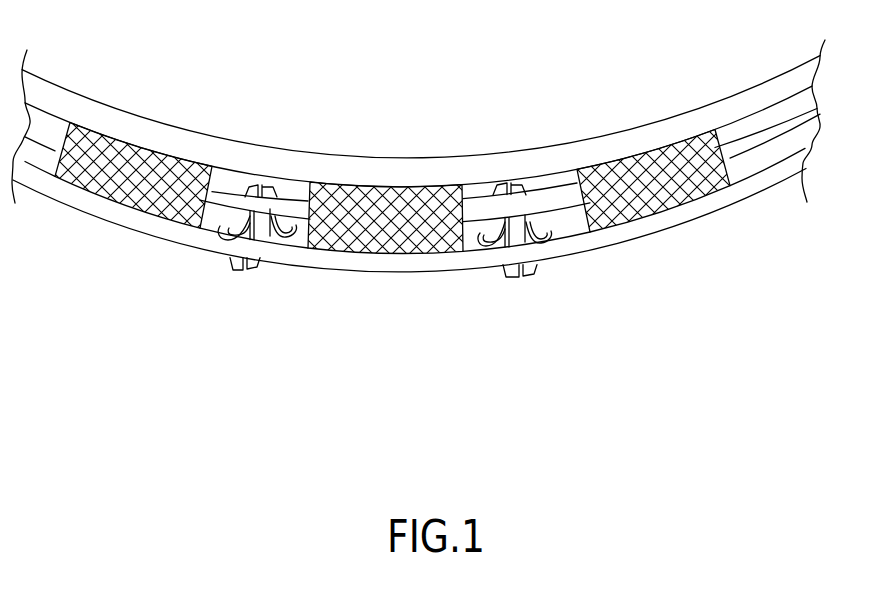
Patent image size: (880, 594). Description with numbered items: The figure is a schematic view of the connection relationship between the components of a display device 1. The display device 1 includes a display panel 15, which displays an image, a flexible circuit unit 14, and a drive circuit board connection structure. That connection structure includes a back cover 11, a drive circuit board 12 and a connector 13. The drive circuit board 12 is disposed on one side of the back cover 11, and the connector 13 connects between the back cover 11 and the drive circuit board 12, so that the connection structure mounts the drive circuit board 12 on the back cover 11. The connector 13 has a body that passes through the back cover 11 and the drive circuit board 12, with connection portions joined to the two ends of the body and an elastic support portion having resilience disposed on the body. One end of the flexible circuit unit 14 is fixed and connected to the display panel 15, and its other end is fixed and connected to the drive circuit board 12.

The display device 1 is at (333, 131).
The back cover 11 is at (752, 145).
The drive circuit board 12 is at (632, 232).
The connector 13 is at (520, 235).
The flexible circuit unit 14 is at (663, 195).
The display panel 15 is at (758, 97).